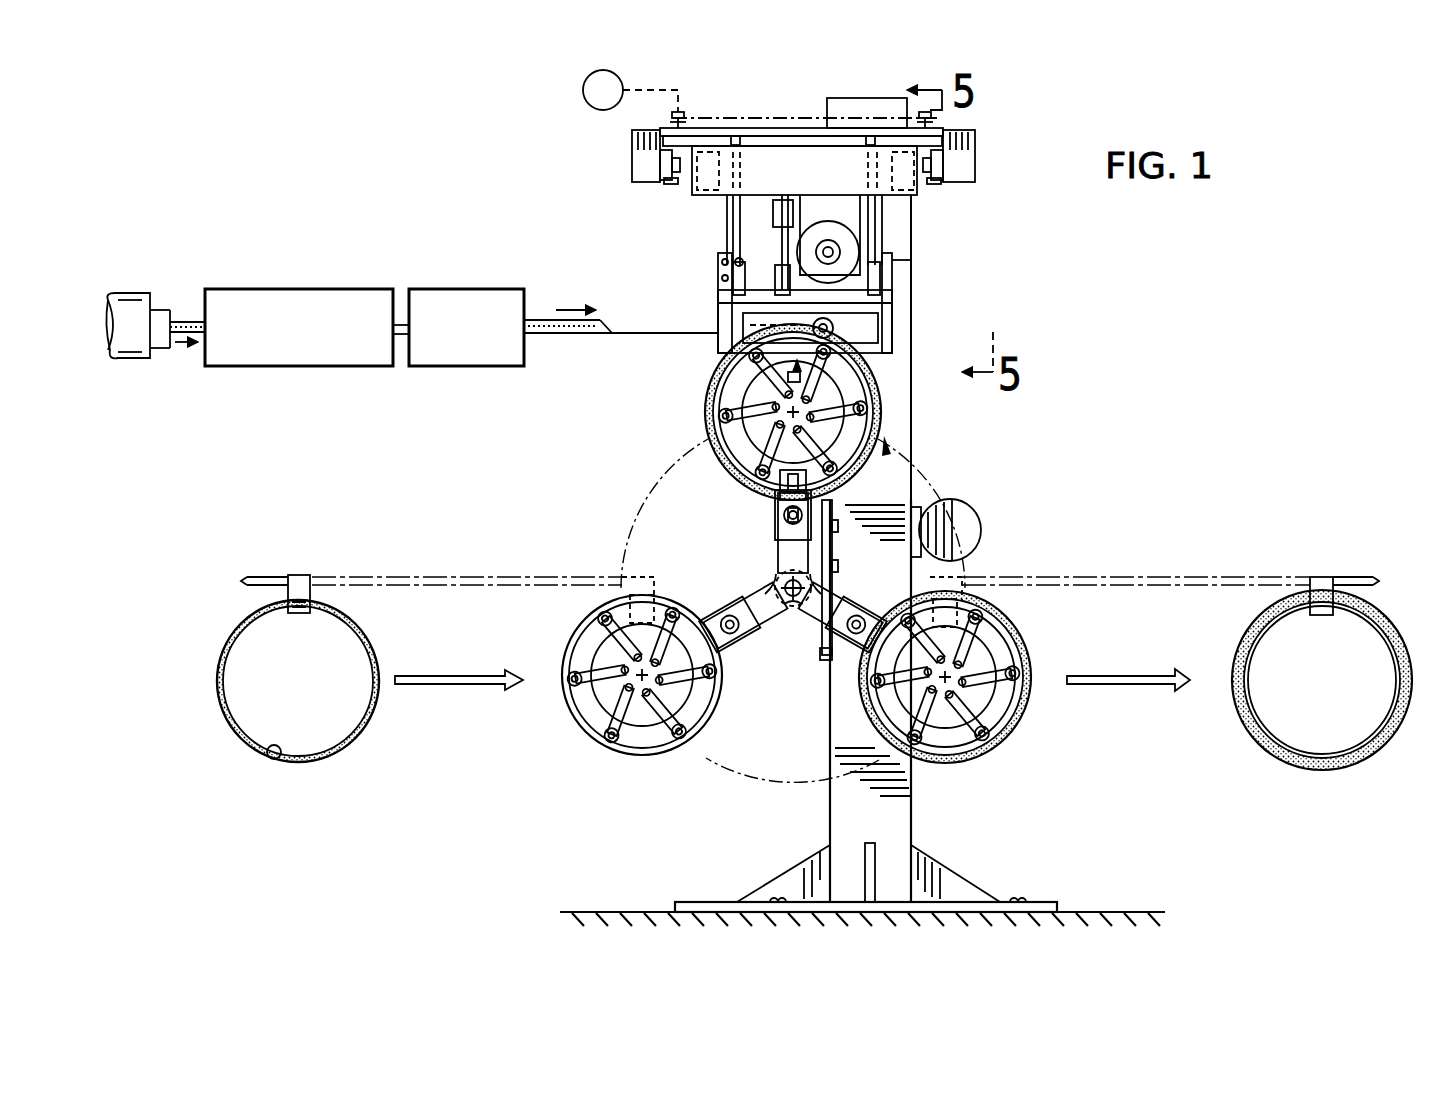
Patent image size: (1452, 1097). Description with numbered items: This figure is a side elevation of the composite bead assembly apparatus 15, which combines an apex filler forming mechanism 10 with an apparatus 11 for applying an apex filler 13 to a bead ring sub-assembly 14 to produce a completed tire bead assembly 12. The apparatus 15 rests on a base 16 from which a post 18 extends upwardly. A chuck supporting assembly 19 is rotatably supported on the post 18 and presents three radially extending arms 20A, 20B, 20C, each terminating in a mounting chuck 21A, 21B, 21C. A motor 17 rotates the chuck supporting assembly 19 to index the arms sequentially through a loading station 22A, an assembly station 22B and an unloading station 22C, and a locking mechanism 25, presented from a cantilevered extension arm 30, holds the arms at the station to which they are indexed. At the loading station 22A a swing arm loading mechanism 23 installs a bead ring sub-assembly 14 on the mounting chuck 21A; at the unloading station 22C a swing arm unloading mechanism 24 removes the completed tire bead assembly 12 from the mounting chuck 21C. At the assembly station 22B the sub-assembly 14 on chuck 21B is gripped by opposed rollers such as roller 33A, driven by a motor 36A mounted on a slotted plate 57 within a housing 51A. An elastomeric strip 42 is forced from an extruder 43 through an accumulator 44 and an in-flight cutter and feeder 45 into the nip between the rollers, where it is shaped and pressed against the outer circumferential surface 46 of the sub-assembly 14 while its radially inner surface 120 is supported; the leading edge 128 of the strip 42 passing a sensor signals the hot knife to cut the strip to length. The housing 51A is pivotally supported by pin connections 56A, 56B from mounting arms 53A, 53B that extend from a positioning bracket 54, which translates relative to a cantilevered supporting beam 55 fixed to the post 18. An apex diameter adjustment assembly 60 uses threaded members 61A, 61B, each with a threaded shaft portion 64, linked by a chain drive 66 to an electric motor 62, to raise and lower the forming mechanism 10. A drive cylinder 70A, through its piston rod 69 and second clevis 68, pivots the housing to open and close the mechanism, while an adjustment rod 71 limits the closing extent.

The apex filler forming mechanism 10 is at (925, 282).
The apparatus for assembling pneumatic tire bead assemblies 11 is at (916, 413).
The tire bead assembly 12 is at (1030, 640).
The apex filler 13 is at (708, 413).
The bead ring sub-assembly 14 is at (730, 470).
The bead assembly apparatus 15 is at (1105, 288).
The base 16 is at (965, 893).
The motor 17 is at (970, 525).
The post 18 is at (838, 825).
The chuck supporting assembly 19 is at (748, 572).
The arm 20A is at (728, 648).
The arm 20B is at (780, 520).
The arm 20C is at (838, 645).
The mounting chuck 21A is at (660, 735).
The mounting chuck 21B is at (735, 433).
The mounting chuck 21C is at (990, 600).
The loading station 22A is at (597, 785).
The assembly station 22B is at (703, 385).
The unloading station 22C is at (1013, 775).
The swing arm loading mechanism 23 is at (300, 575).
The swing arm unloading mechanism 24 is at (1320, 578).
The locking mechanism 25 is at (834, 522).
The cantilevered extension arm 30 is at (822, 656).
The roller 33A is at (800, 365).
The motor 36A is at (862, 213).
The elastomeric strip 42 is at (548, 318).
The extruder 43 is at (138, 296).
The accumulator 44 is at (286, 289).
The in-flight cutter and feeder 45 is at (445, 289).
The outer circumferential surface 46 is at (310, 760).
The housing 51A is at (894, 328).
The mounting arm 53A is at (727, 222).
The mounting arm 53B is at (880, 230).
The positioning bracket 54 is at (765, 185).
The cantilevered supporting beam 55 is at (632, 160).
The pin connection 56A is at (735, 250).
The pin connection 56B is at (880, 253).
The slotted plate 57 is at (720, 270).
The apex diameter adjustment assembly 60 is at (699, 123).
The threaded member 61A is at (632, 140).
The threaded member 61B is at (948, 135).
The electric motor 62 is at (583, 88).
The threaded shaft portion 64 is at (672, 183).
The chain drive 66 is at (745, 118).
The second clevis 68 is at (760, 297).
The piston rod 69 is at (738, 263).
The drive cylinder 70A is at (788, 225).
The adjustment rod 71 is at (870, 128).
The radially inner surface 120 is at (272, 759).
The leading edge 128 is at (608, 318).